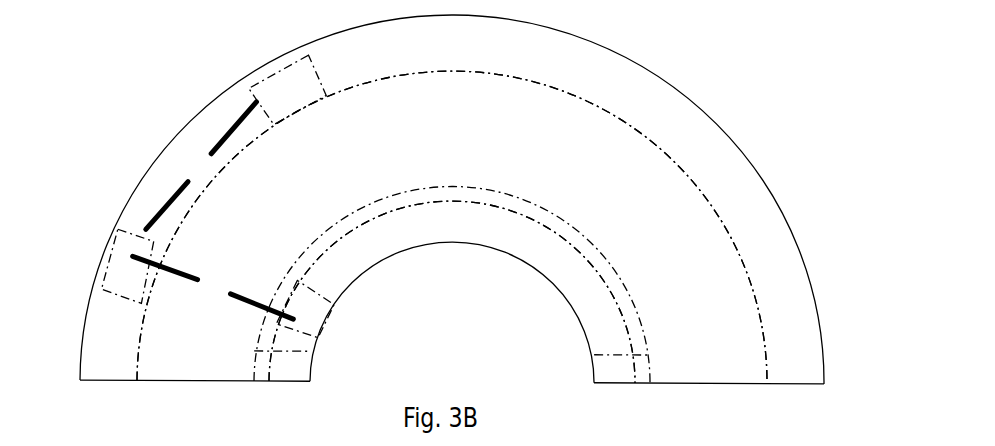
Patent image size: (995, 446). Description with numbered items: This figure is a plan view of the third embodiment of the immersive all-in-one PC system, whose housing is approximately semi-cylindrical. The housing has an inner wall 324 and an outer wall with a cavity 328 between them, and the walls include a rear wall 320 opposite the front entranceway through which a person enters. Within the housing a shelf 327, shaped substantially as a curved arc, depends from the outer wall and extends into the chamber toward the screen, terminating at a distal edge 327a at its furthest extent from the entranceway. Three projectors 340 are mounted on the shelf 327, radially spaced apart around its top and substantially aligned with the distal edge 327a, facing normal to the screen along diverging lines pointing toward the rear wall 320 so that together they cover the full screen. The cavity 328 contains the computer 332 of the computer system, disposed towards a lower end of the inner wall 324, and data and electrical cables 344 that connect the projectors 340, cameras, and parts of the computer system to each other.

The rear wall 320 is at (620, 52).
The inner wall 324 is at (618, 300).
The shelf 327 is at (462, 193).
The distal edge 327a is at (578, 228).
The cavity 328 is at (781, 230).
The computer 332 is at (287, 86).
The projectors 340 is at (304, 305).
The data and electrical cables 344 is at (222, 140).